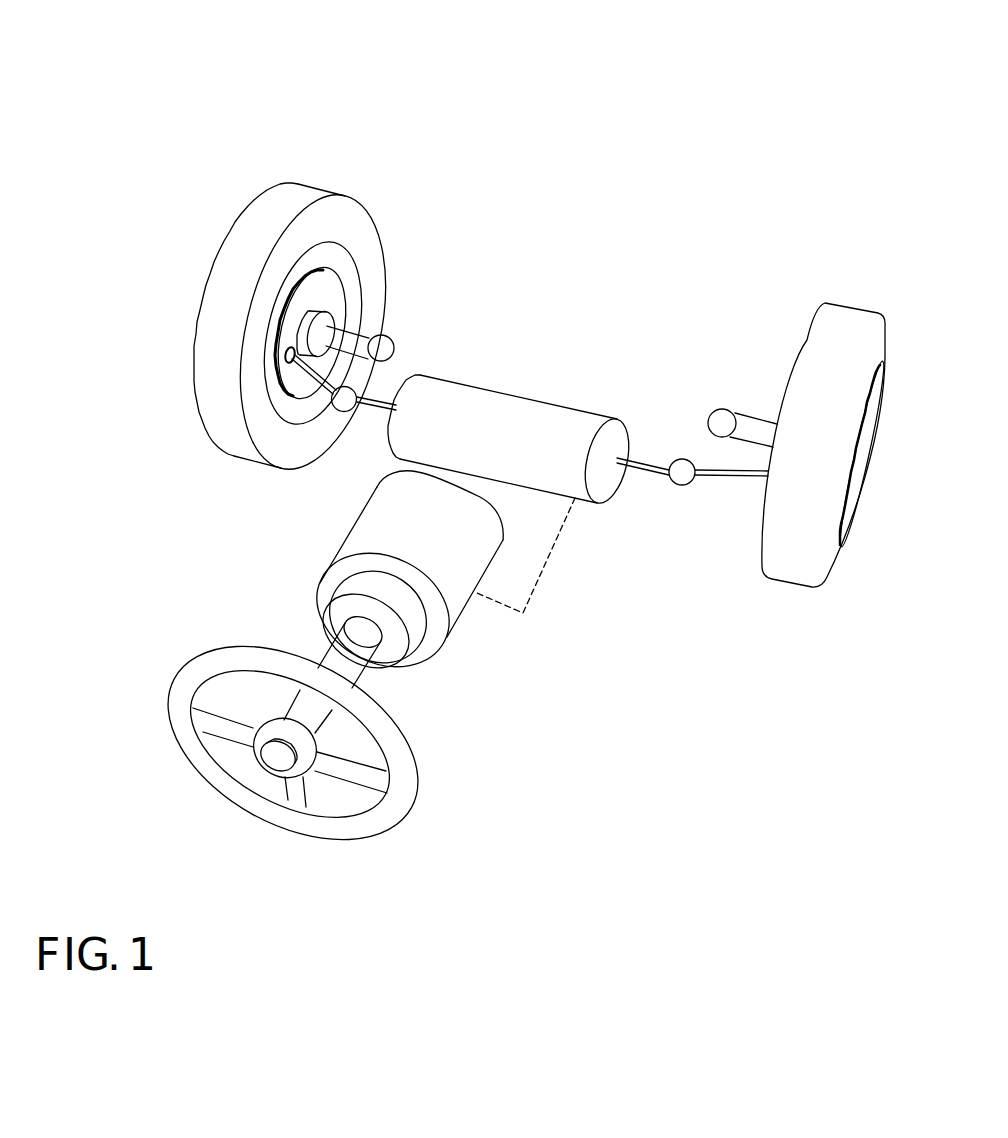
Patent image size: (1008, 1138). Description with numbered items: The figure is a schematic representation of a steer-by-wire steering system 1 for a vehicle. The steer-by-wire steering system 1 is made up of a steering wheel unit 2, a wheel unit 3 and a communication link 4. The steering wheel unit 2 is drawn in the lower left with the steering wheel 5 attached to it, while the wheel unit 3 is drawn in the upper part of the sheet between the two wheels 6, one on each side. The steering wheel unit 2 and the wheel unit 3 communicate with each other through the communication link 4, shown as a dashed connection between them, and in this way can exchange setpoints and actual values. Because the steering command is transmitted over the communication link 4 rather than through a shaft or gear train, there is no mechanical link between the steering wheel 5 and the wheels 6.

The steer-by-wire steering system 1 is at (230, 98).
The steering wheel unit 2 is at (288, 575).
The wheel unit 3 is at (567, 285).
The communication link 4 is at (542, 578).
The steering wheel 5 is at (395, 803).
The wheels 6 is at (222, 393).